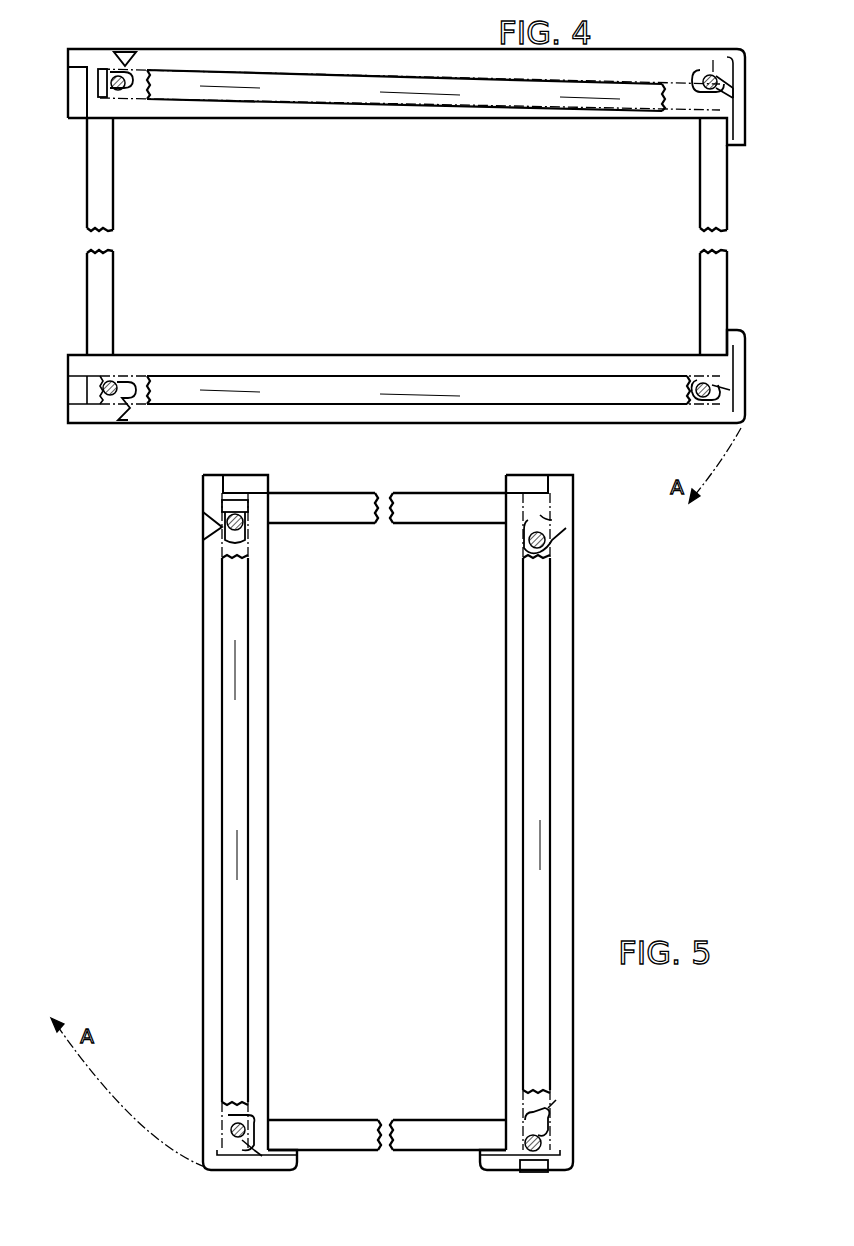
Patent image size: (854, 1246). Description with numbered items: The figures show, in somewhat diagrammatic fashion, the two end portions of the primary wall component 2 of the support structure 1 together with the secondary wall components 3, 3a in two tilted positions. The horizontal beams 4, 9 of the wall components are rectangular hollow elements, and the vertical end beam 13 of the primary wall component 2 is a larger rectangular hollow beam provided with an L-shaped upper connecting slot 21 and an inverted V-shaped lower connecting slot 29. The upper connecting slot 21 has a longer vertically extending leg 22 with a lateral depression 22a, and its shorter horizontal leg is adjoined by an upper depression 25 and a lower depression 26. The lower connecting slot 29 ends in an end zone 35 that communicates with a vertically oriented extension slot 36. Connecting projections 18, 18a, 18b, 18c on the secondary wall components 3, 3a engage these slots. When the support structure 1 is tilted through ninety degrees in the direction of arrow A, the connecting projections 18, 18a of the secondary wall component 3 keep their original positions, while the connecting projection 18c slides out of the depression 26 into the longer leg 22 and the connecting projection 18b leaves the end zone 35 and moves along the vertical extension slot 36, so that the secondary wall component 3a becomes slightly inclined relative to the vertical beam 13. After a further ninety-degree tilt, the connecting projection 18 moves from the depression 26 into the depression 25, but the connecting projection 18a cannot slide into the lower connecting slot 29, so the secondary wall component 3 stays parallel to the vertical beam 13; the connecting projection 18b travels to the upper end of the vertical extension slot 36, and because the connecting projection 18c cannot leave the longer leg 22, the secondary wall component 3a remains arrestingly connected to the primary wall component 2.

In FIG. 4, the support structure 1 is at (195, 428).
In FIG. 5, the support structure 1 is at (191, 701).
In FIG. 4, the primary wall component 2 is at (121, 273).
In FIG. 5, the primary wall component 2 is at (361, 1106).
In FIG. 4, the secondary wall component 3 is at (410, 385).
In FIG. 5, the secondary wall component 3 is at (230, 803).
In FIG. 4, the secondary wall component 3a is at (413, 82).
In FIG. 5, the secondary wall component 3a is at (538, 822).
In FIG. 4, the horizontal beam 4 is at (100, 187).
In FIG. 5, the horizontal beam 4 is at (435, 510).
In FIG. 4, the horizontal beam 9 is at (712, 186).
In FIG. 5, the horizontal beam 9 is at (443, 1128).
In FIG. 4, the vertical end beam 13 is at (332, 60).
In FIG. 5, the vertical end beam 13 is at (208, 876).
In FIG. 4, the connecting projection 18 is at (700, 385).
In FIG. 5, the connecting projection 18 is at (232, 1130).
In FIG. 4, the connecting projection 18a is at (123, 383).
In FIG. 5, the connecting projection 18a is at (240, 518).
In FIG. 4, the connecting projection 18b is at (120, 92).
In FIG. 5, the connecting projection 18b is at (545, 542).
In FIG. 4, the connecting projection 18c is at (718, 78).
In FIG. 5, the connecting projection 18c is at (541, 1145).
In FIG. 4, the upper connecting slot 21 is at (706, 74).
In FIG. 5, the upper connecting slot 21 is at (548, 1110).
In FIG. 4, the vertically extending leg 22 is at (720, 95).
In FIG. 5, the vertically extending leg 22 is at (545, 1125).
In FIG. 4, the lateral depression 22a is at (724, 92).
In FIG. 5, the lateral depression 22a is at (258, 1150).
In FIG. 4, the upper depression 25 is at (720, 392).
In FIG. 5, the upper depression 25 is at (250, 1141).
In FIG. 4, the lower depression 26 is at (695, 75).
In FIG. 5, the lower depression 26 is at (232, 1108).
In FIG. 4, the lower connecting slot 29 is at (132, 58).
In FIG. 5, the lower connecting slot 29 is at (209, 540).
In FIG. 4, the end zone 35 is at (102, 70).
In FIG. 5, the vertical extension slot 36 is at (540, 520).